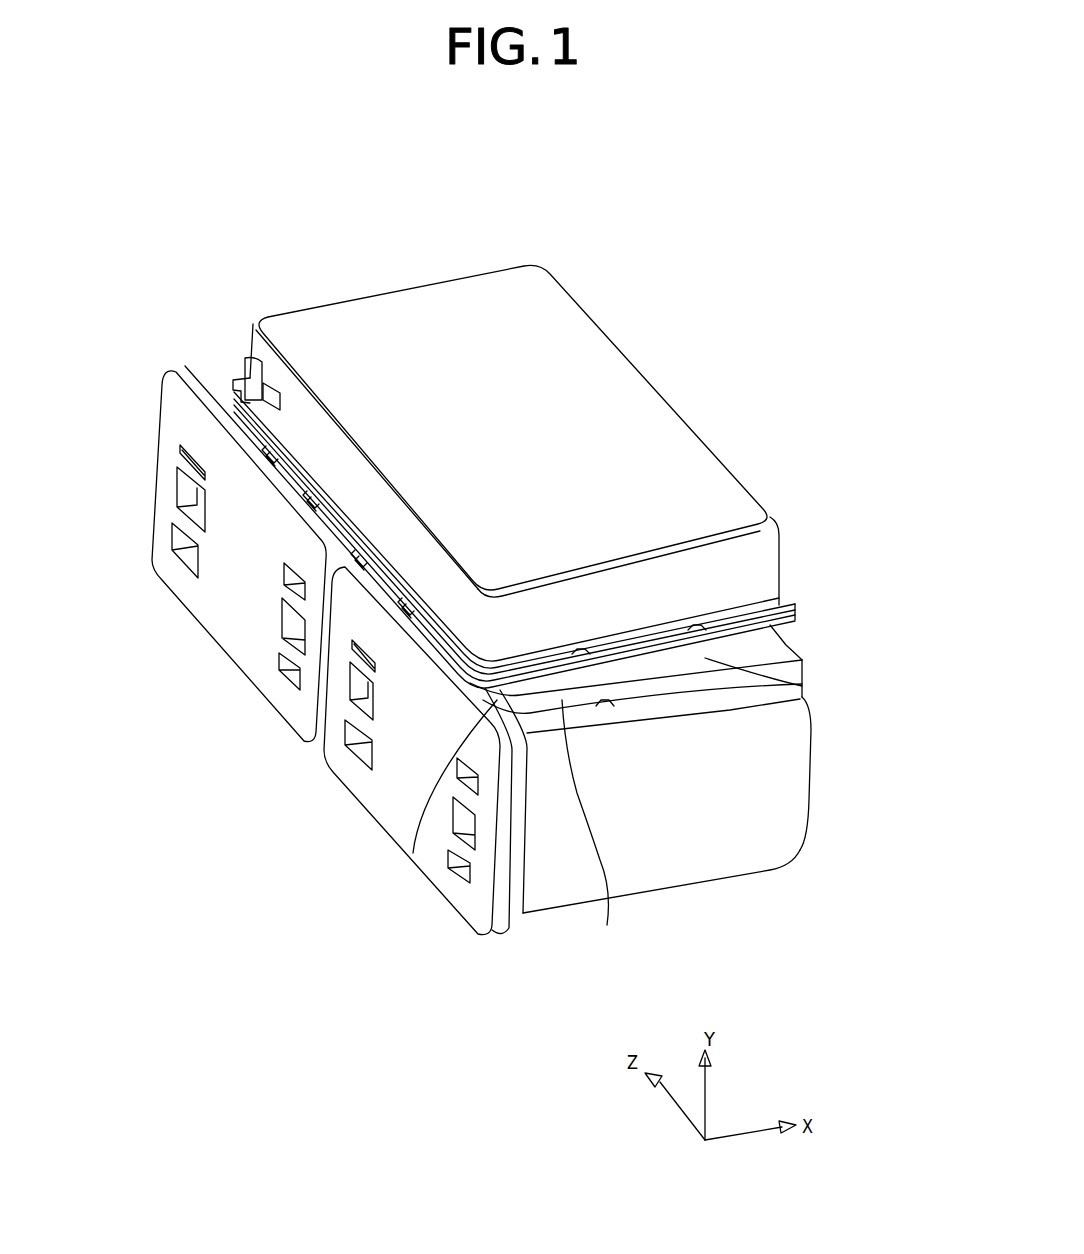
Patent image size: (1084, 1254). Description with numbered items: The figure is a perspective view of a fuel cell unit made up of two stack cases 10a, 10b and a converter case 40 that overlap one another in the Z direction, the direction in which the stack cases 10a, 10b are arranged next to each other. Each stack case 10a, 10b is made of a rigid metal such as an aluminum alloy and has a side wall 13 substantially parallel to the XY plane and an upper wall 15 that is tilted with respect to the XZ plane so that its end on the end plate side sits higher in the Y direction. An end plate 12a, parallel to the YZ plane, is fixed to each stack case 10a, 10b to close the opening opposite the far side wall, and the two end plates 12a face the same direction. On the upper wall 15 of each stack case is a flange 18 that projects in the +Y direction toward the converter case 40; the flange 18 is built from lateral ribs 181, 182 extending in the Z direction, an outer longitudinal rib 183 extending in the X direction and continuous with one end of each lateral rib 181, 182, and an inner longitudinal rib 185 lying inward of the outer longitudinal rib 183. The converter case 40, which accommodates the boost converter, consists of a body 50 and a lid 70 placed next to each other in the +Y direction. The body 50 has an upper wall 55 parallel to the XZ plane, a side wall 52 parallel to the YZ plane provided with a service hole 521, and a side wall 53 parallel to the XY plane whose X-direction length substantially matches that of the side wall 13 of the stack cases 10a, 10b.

The converter case 40 is at (797, 358).
The body 50 is at (683, 415).
The upper wall 55 is at (441, 313).
The side wall 52 is at (318, 425).
The service hole 521 is at (252, 365).
The side wall 53 is at (718, 580).
The lid 70 is at (789, 599).
The flange 18 is at (801, 660).
The lateral rib 181 is at (788, 642).
The lateral rib 182 is at (413, 853).
The outer longitudinal rib 183 is at (712, 708).
The inner longitudinal rib 185 is at (802, 686).
The side wall 13 is at (705, 838).
The upper wall 15 is at (586, 832).
The stack case 10a is at (812, 798).
The stack case 10b is at (157, 487).
The end plate 12a is at (229, 598).